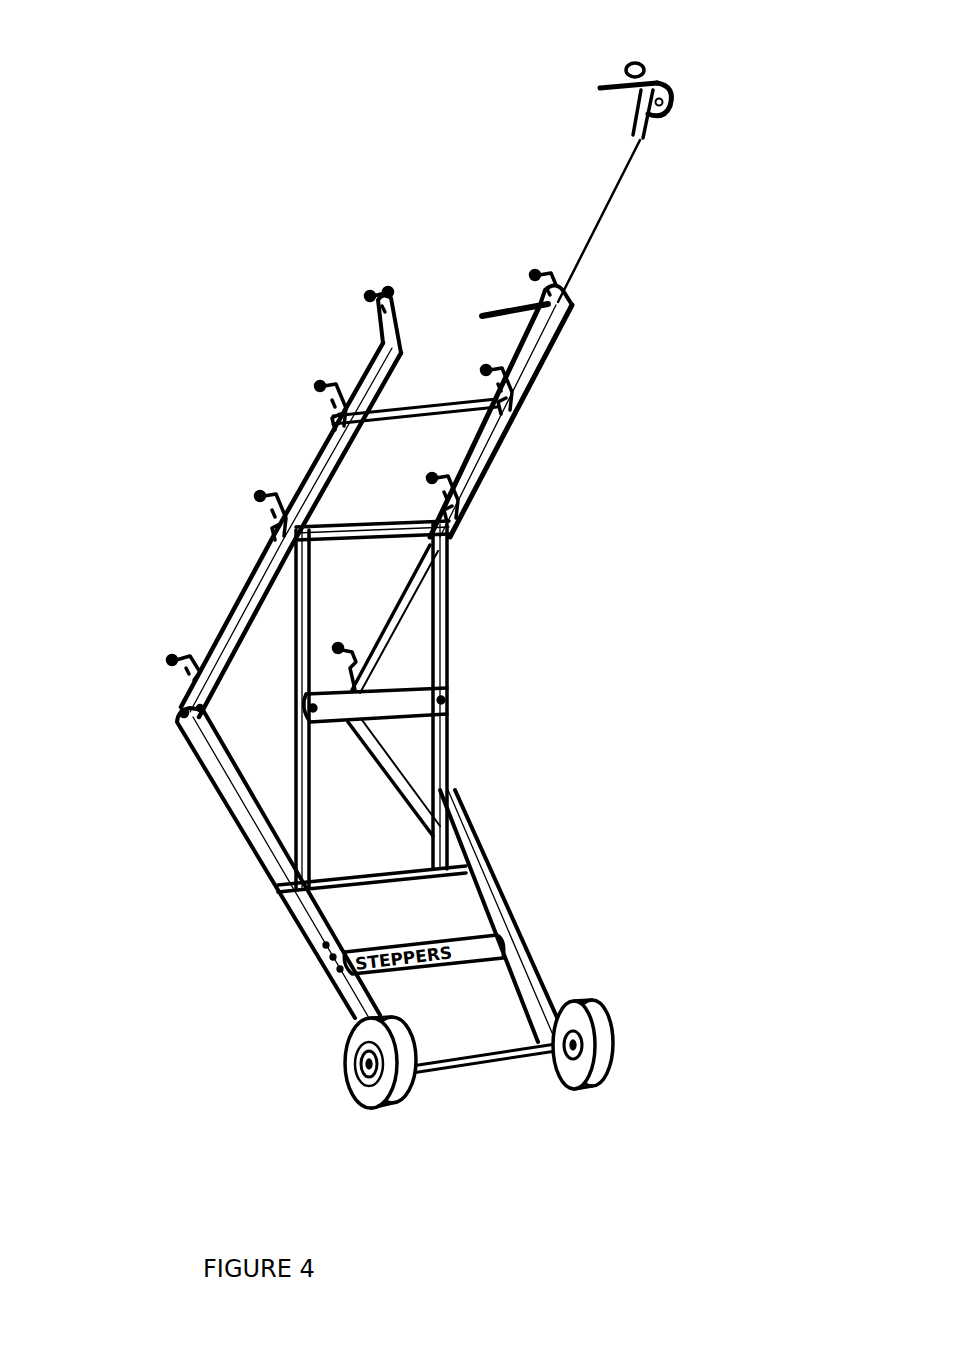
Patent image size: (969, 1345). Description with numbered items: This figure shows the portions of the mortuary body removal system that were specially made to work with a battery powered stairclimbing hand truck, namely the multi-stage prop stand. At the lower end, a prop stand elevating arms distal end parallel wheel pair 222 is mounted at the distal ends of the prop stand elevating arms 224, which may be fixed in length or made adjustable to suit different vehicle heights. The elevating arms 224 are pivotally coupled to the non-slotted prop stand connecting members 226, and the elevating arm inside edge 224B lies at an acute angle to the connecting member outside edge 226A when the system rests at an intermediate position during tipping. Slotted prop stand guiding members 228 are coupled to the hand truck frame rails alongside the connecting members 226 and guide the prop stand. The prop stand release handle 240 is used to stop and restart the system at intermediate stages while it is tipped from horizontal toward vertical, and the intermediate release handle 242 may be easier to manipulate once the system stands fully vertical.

The prop stand elevating arms distal end parallel wheel pair 222 is at (400, 1100).
The prop stand elevating arms 224 is at (493, 933).
The elevating arm inside edge 224B is at (248, 800).
The non-slotted prop stand connecting members 226 is at (345, 655).
The connecting member outside edge 226A is at (186, 712).
The slotted prop stand guiding members 228 is at (458, 455).
The prop stand release handle 240 is at (641, 62).
The intermediate release handle 242 is at (500, 308).